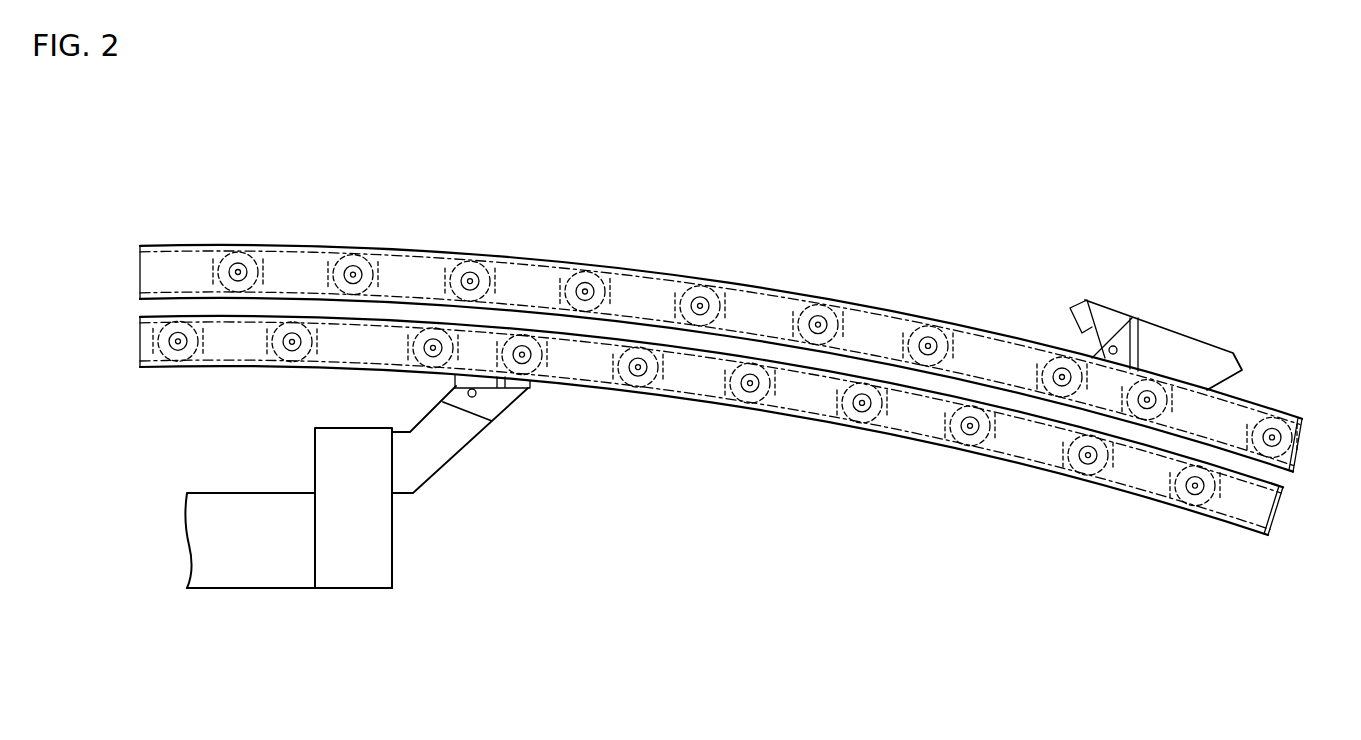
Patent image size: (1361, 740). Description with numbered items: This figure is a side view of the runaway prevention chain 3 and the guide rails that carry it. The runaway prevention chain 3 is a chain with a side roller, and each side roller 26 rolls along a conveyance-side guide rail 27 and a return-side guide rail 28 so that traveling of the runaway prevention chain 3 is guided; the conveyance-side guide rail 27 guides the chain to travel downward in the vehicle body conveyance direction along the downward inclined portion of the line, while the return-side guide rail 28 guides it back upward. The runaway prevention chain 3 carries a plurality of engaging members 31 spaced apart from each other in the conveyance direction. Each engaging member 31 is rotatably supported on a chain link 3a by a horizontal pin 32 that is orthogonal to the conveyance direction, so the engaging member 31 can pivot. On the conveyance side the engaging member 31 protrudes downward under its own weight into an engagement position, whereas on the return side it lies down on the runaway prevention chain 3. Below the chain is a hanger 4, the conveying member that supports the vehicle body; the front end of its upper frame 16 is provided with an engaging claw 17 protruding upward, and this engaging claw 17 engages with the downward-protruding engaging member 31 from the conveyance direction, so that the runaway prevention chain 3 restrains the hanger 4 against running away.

The runaway prevention chain 3 is at (721, 379).
The chain link 3a is at (495, 318).
The hanger 4 is at (290, 590).
The upper frame 16 is at (236, 590).
The engaging claw 17 is at (315, 455).
The side roller 26 is at (240, 262).
The conveyance-side guide rail 27 is at (668, 398).
The return-side guide rail 28 is at (398, 246).
The engaging member 31 is at (448, 460).
The horizontal pin 32 is at (478, 396).